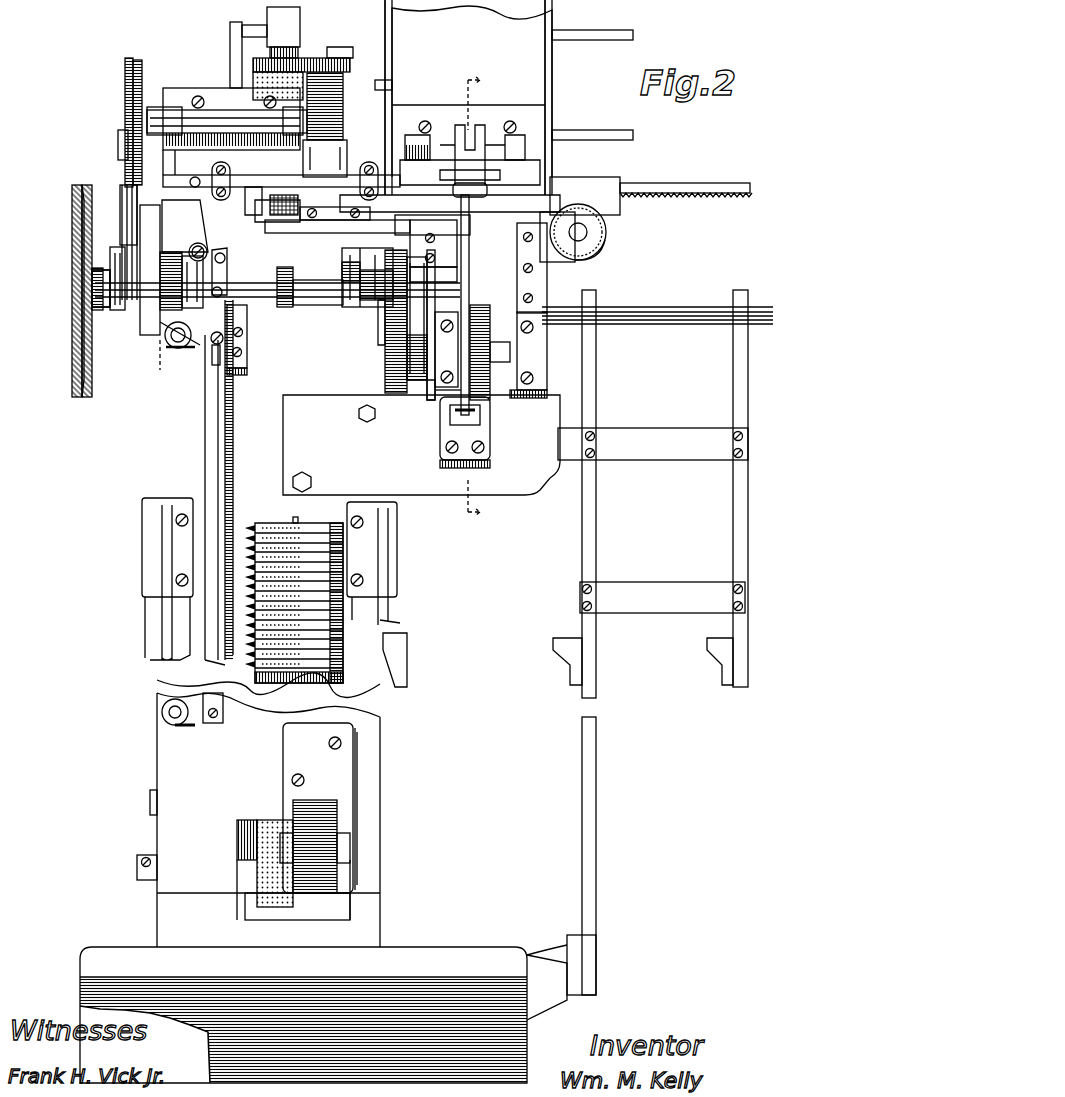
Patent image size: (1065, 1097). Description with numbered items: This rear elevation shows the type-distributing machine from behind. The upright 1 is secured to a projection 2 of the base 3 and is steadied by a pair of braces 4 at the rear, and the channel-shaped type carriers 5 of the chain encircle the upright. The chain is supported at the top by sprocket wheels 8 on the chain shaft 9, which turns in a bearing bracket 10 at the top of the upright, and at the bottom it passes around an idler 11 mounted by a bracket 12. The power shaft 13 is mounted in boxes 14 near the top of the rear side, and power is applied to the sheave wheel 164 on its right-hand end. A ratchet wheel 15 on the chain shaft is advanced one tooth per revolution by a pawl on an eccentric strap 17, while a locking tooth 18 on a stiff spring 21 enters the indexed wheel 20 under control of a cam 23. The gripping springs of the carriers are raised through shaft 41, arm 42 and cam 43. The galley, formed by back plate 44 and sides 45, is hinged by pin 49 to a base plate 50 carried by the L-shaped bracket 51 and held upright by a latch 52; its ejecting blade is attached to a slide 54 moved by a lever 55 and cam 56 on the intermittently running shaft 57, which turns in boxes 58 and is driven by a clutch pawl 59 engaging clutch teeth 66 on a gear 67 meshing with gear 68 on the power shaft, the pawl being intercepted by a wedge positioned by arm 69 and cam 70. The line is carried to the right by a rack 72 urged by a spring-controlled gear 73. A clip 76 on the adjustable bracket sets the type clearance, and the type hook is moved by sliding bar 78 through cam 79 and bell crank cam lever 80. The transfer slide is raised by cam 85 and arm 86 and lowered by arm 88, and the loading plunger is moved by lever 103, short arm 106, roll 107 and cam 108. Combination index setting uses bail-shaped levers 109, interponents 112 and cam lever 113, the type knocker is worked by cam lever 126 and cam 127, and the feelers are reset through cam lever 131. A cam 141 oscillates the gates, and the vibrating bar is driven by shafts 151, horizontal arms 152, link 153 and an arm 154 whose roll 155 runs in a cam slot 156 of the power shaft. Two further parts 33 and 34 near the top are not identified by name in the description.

The upright 1 is at (165, 770).
The projection 2 is at (165, 910).
The base 3 is at (105, 958).
The braces 4 is at (160, 552).
The type carriers 5 is at (300, 665).
The sprocket wheels 8 is at (335, 148).
The shaft 9 is at (205, 112).
The bearing bracket 10 is at (227, 85).
The idler 11 is at (312, 830).
The bracket 12 is at (290, 797).
The power shaft 13 is at (315, 305).
The boxes 14 is at (150, 265).
The ratchet wheel 15 is at (139, 62).
The eccentric strap 17 is at (125, 328).
The locking tooth 18 is at (122, 133).
The indexed wheel 20 is at (130, 70).
The stiff spring 21 is at (128, 168).
The cam 23 is at (125, 230).
The block 33 is at (300, 22).
The post 34 is at (232, 32).
The shaft 41 is at (228, 172).
The arm 42 is at (222, 248).
The cam 43 is at (225, 285).
The back plate 44 is at (509, 270).
The sides 45 is at (388, 15).
The pin 49 is at (495, 170).
The base plate 50 is at (528, 208).
The L-shaped bracket 51 is at (283, 452).
The latch 52 is at (473, 135).
The slide 54 is at (487, 192).
The lever 55 is at (492, 447).
The cam 56 is at (490, 420).
The intermittently running shaft 57 is at (492, 360).
The boxes 58 is at (520, 340).
The clutch pawl 59 is at (430, 385).
The clutch teeth 66 is at (410, 385).
The gear 67 is at (407, 395).
The gear 68 is at (390, 340).
The arm 69 is at (432, 312).
The cam 70 is at (437, 395).
The rack 72 is at (688, 192).
The pinion or gear 73 is at (600, 242).
The clip 76 is at (383, 80).
The sliding bar 78 is at (258, 190).
The cam 79 is at (185, 258).
The bell crank cam lever 80 is at (196, 200).
The cam 85 is at (360, 297).
The arm 86 is at (352, 262).
The arm 88 is at (395, 300).
The lever or arm 103 is at (400, 210).
The short arm 106 is at (420, 258).
The roll 107 is at (440, 280).
The cam 108 is at (440, 287).
The bail shaped levers 109 is at (305, 225).
The interponent 112 is at (282, 205).
The cam lever 113 is at (245, 370).
The cam lever 126 is at (345, 272).
The cam 127 is at (428, 398).
The cam lever 131 is at (393, 232).
The cam 141 is at (200, 350).
The shafts 151 is at (170, 717).
The horizontal arms 152 is at (210, 728).
The link 153 is at (225, 430).
The arm 154 is at (178, 330).
The roll 155 is at (160, 300).
The cam slot 156 is at (170, 307).
The sheave wheel 164 is at (72, 215).